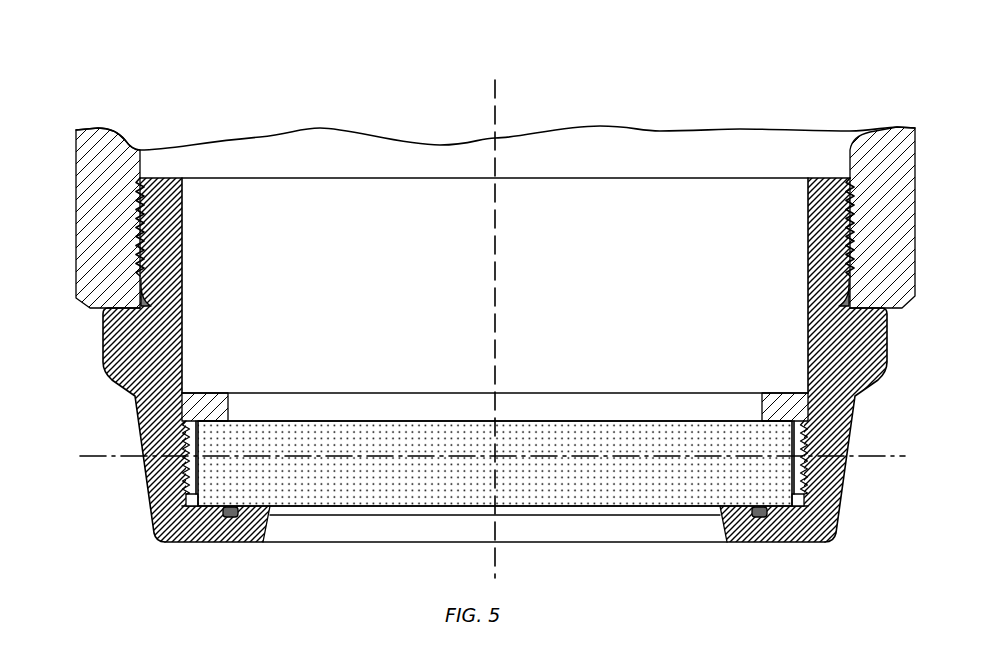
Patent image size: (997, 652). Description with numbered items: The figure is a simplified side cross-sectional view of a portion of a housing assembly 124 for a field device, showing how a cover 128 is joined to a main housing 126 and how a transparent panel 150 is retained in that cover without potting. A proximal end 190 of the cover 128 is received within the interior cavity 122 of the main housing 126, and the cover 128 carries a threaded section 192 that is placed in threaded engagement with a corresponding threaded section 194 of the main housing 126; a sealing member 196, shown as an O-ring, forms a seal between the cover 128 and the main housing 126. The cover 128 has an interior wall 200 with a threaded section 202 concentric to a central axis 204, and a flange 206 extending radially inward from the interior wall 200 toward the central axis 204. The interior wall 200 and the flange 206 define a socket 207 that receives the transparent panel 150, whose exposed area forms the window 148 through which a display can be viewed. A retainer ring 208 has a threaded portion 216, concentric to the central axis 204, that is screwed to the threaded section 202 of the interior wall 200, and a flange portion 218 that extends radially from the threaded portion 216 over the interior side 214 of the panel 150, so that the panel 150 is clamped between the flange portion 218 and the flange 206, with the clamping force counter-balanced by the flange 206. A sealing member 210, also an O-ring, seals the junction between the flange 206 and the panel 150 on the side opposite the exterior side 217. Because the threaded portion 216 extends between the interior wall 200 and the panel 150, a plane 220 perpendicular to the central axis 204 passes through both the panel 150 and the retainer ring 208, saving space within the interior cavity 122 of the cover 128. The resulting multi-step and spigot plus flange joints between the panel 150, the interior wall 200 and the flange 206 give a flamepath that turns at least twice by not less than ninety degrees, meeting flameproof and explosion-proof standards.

The housing assembly 124 is at (138, 62).
The interior cavity 122 is at (315, 150).
The main housing 126 is at (658, 142).
The proximal end 190 is at (221, 195).
The threaded section 192 is at (137, 221).
The threaded section 194 is at (148, 246).
The sealing member 196 is at (858, 306).
The cover 128 is at (118, 344).
The window 148 is at (676, 535).
The flange 206 is at (200, 543).
The exterior side 217 is at (375, 508).
The sealing member 210 is at (230, 543).
The interior wall 200 is at (183, 330).
The retainer ring 208 is at (575, 397).
The threaded portion 216 is at (184, 411).
The flange portion 218 is at (790, 405).
The threaded section 202 is at (196, 445).
The transparent panel 150 is at (575, 495).
The interior side 214 is at (407, 420).
The socket 207 is at (684, 362).
The central axis 204 is at (488, 95).
The plane 220 is at (100, 460).